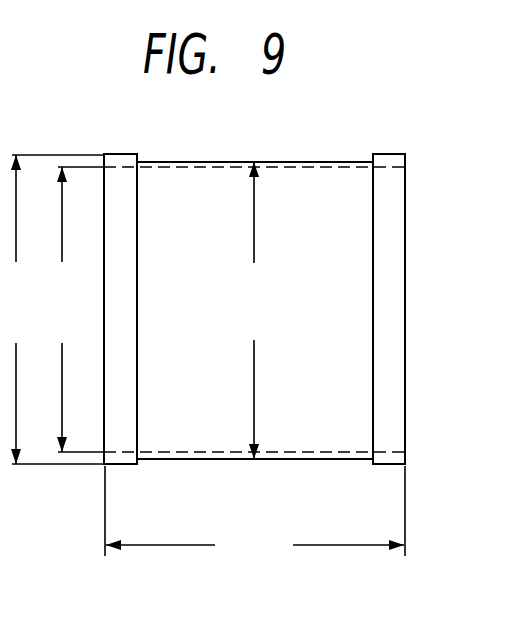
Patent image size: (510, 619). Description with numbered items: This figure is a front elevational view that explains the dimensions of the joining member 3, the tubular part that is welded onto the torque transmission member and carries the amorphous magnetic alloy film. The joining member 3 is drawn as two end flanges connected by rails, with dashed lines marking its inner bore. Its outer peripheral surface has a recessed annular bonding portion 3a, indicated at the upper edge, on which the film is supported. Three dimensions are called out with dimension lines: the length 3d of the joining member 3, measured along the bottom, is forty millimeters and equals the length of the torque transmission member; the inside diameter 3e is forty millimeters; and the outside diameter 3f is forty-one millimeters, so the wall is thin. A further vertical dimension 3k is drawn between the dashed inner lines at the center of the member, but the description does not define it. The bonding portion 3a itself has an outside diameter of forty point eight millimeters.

The joining member 3 is at (392, 150).
The bonding portion 3a is at (245, 161).
The length 3d is at (255, 512).
The inside diameter 3e is at (76, 309).
The outside diameter 3f is at (52, 309).
The rail spacing dimension 3k is at (253, 310).